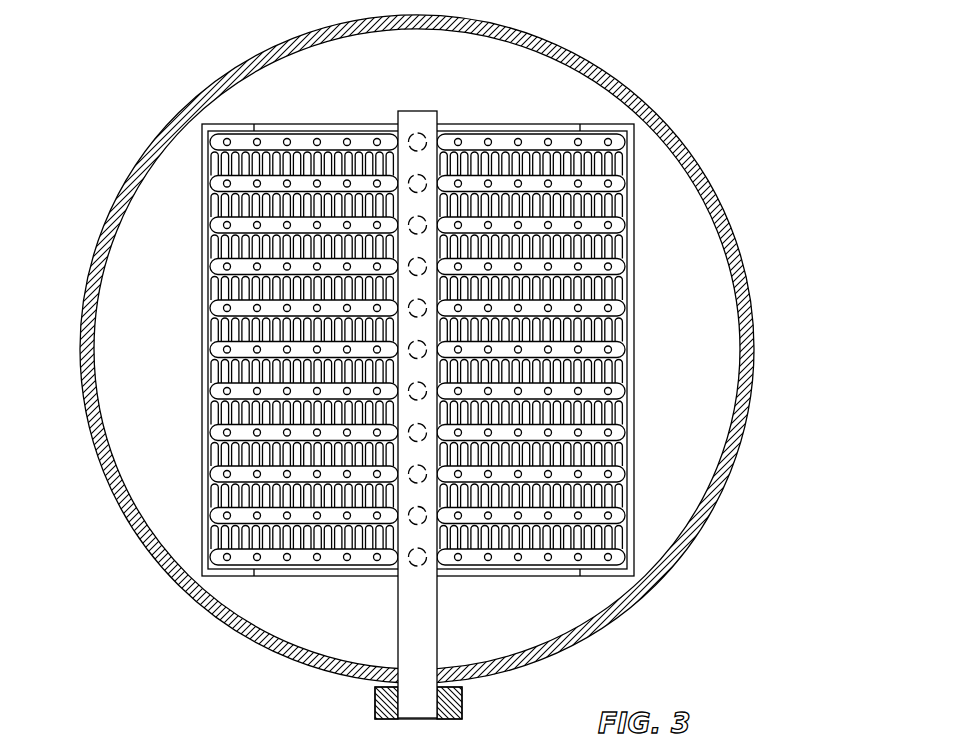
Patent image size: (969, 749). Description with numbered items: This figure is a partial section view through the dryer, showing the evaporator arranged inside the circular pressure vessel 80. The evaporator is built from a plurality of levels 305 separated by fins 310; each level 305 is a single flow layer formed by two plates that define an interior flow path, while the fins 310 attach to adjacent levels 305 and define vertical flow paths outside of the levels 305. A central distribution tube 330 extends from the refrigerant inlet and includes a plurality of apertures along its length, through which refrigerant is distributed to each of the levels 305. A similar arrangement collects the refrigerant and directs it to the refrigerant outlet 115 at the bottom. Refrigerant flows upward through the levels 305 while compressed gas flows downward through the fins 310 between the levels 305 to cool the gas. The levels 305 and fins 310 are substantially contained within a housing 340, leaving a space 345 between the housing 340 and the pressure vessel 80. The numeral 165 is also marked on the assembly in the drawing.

The pressure vessel 80 is at (733, 462).
The refrigerant outlet 115 is at (377, 697).
The filter assembly 165 is at (556, 97).
The levels 305 is at (625, 184).
The fins 310 is at (215, 494).
The distribution tube 330 is at (422, 617).
The housing 340 is at (202, 325).
The space 345 is at (147, 225).